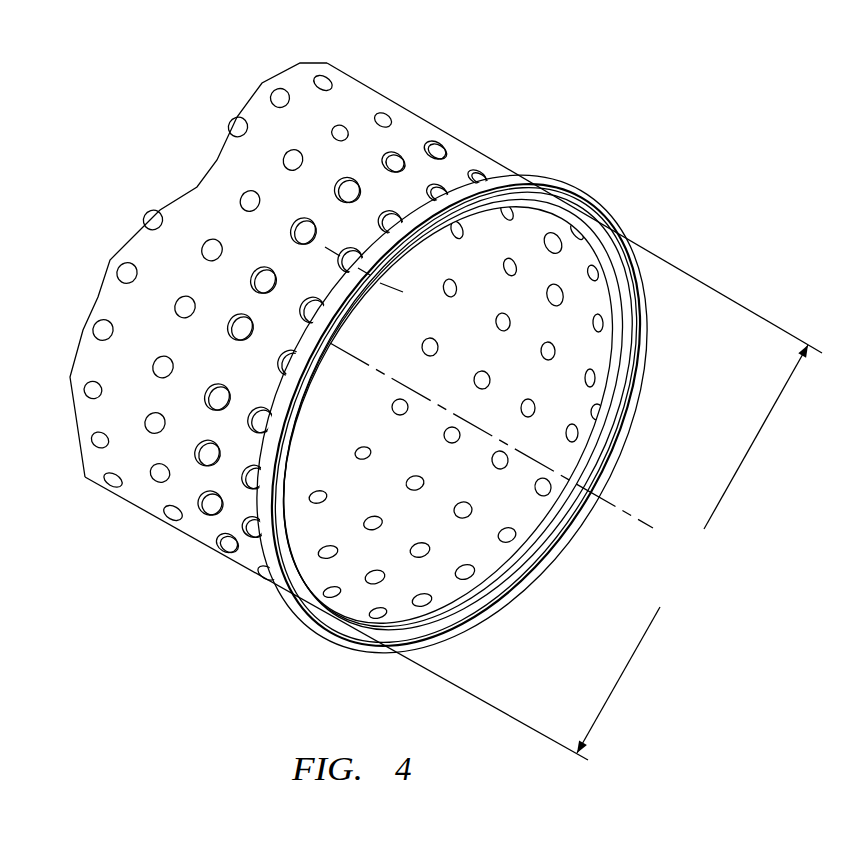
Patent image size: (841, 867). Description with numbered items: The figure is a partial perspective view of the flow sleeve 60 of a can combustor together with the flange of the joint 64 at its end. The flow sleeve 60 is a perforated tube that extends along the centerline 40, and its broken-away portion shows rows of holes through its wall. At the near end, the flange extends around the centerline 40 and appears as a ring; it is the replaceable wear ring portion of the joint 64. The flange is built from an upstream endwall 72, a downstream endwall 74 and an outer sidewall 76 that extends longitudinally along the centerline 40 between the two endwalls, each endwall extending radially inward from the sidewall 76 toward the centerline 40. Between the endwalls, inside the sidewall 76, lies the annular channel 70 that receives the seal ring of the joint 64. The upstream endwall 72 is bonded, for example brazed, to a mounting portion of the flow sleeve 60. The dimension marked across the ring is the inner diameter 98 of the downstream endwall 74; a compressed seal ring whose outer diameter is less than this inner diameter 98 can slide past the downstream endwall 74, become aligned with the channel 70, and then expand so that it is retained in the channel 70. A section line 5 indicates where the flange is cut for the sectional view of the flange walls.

The centerline 40 is at (622, 513).
The flow sleeve 60 is at (495, 160).
The joint 64 is at (452, 414).
The annular channel 70 is at (484, 581).
The upstream endwall 72 is at (605, 412).
The downstream endwall 74 is at (633, 328).
The outer sidewall 76 is at (527, 179).
The inner diameter of the downstream endwall 98 is at (692, 549).
The section line 5- 5 is at (427, 265).